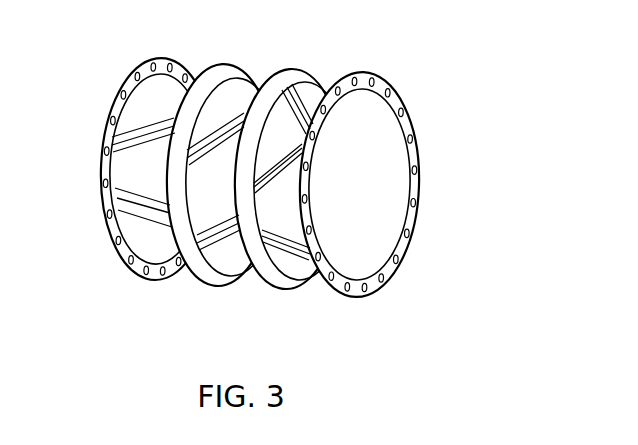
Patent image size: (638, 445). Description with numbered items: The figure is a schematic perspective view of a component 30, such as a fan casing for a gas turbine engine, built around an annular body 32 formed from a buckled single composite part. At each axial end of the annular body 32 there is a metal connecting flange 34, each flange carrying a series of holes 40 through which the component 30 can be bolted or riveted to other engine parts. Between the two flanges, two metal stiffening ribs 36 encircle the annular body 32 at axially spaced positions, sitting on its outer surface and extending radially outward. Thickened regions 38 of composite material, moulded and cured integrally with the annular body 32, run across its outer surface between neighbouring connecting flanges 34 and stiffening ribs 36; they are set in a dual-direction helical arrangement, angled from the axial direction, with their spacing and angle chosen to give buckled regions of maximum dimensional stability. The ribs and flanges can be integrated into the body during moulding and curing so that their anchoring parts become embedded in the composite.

The component 30 is at (455, 65).
The annular body 32 is at (148, 102).
The connecting flanges 34 is at (337, 288).
The stiffening ribs 36 is at (292, 70).
The thickened regions 38 is at (114, 148).
The holes 40 is at (107, 231).